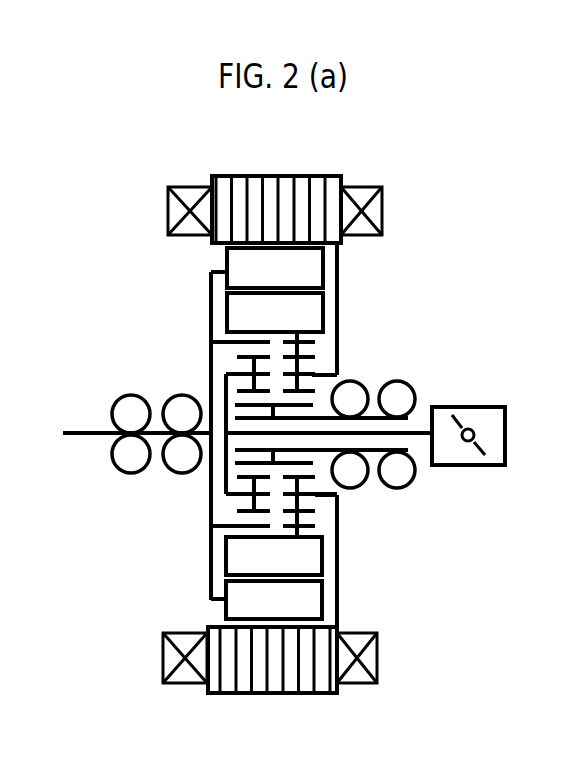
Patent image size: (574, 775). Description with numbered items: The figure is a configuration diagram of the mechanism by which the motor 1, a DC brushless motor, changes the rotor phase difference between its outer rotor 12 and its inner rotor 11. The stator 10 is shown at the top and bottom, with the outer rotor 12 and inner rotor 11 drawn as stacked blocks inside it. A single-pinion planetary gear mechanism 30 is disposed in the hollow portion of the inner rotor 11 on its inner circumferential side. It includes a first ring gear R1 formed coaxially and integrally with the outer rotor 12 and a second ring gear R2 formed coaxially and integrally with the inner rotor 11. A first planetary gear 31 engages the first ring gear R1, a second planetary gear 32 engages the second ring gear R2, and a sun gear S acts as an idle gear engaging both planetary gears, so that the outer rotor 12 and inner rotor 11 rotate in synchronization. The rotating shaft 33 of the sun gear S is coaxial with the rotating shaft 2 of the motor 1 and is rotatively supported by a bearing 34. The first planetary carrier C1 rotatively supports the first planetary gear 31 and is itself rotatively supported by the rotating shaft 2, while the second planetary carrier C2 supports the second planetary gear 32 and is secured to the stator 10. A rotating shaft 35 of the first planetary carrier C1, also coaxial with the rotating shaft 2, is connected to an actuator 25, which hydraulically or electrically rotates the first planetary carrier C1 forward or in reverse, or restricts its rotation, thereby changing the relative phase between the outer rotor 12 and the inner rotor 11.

The motor 1 is at (416, 194).
The rotating shaft 2 is at (77, 433).
The stator 10 is at (300, 176).
The inner rotor 11 is at (226, 312).
The outer rotor 12 is at (226, 263).
The first ring gear R1 is at (224, 341).
The second ring gear R2 is at (300, 341).
The first planetary gear 31 is at (238, 357).
The second planetary gear 32 is at (310, 357).
The rotating shaft of the sun gear 33 is at (318, 448).
The sun gear S is at (303, 398).
The bearing 34 is at (415, 398).
The rotating shaft of the first planetary carrier 35 is at (410, 440).
The actuator 25 is at (488, 407).
The first planetary carrier C1 is at (235, 495).
The second planetary carrier C2 is at (316, 496).
The planetary gear mechanism 30 is at (362, 587).